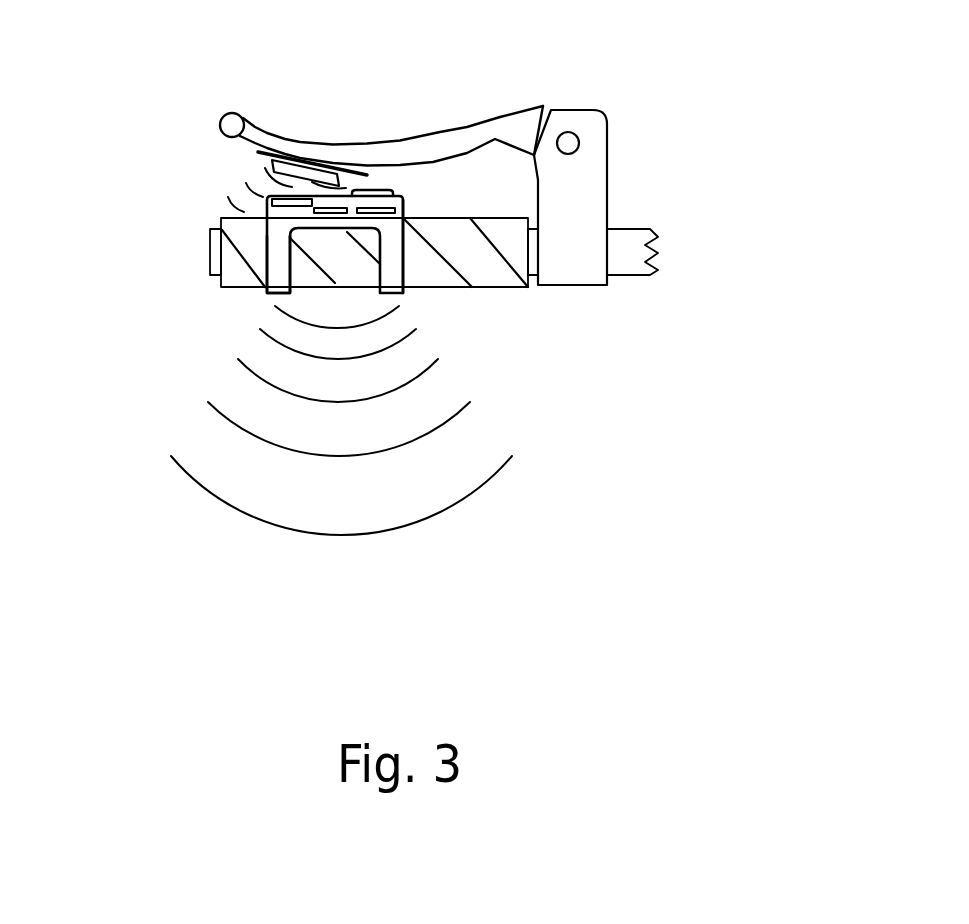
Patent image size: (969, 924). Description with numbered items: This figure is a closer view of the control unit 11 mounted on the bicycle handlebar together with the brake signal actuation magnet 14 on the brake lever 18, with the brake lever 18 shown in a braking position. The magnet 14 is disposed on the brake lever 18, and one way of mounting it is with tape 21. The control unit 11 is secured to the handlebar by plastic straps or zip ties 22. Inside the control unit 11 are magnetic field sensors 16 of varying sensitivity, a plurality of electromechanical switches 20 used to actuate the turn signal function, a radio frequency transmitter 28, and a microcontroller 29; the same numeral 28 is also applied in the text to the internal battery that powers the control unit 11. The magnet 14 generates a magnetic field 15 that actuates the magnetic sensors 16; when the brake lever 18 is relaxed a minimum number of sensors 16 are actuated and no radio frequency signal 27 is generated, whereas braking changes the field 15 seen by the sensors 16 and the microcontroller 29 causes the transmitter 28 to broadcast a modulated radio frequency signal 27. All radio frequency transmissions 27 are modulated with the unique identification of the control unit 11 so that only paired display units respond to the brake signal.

The control unit 11 is at (219, 276).
The magnet 14 is at (191, 191).
The magnetic field 15 is at (189, 217).
The magnetic field sensors 16 is at (172, 256).
The brake lever 18 is at (433, 99).
The electromechanical switches 20 is at (431, 103).
The tape 21 is at (258, 152).
The zip ties 22 is at (161, 319).
The radio frequency transmissions 27 is at (453, 433).
The radio frequency transmitter 28 is at (536, 339).
The microcontroller 29 is at (569, 301).